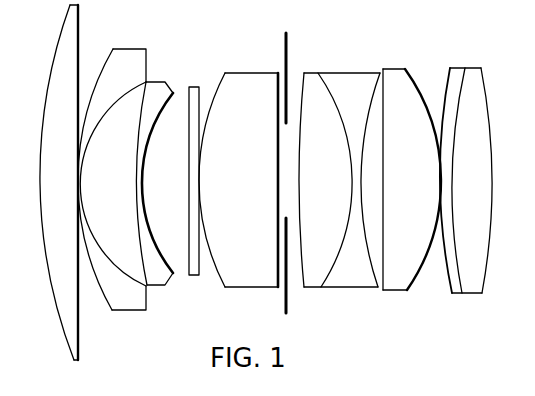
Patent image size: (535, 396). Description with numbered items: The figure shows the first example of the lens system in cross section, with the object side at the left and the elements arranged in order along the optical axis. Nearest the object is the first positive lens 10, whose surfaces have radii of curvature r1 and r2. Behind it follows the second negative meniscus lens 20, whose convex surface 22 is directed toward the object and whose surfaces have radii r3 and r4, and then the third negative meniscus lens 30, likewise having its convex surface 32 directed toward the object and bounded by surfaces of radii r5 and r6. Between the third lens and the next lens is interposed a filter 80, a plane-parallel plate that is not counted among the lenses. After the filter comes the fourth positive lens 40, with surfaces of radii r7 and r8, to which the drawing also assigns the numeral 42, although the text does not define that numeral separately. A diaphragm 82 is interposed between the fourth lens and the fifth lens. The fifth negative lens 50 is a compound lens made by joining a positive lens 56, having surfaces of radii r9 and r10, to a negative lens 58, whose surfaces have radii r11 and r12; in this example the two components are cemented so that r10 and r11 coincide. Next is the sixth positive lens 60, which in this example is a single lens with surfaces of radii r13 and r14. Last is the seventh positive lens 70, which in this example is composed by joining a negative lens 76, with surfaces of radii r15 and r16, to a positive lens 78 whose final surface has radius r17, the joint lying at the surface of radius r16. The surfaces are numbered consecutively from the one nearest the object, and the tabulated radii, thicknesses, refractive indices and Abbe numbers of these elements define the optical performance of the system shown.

The first positive lens 10 is at (50, 182).
The second negative meniscus lens 20 is at (112, 178).
The convex surface 22 is at (111, 309).
The third negative meniscus lens 30 is at (146, 196).
The convex surface 32 is at (138, 128).
The fourth positive lens 40 is at (235, 195).
The lens element 42 is at (221, 288).
The fifth negative lens 50 is at (343, 187).
The positive lens 56 is at (311, 199).
The negative lens 58 is at (365, 202).
The sixth positive lens 60 is at (418, 183).
The seventh positive lens 70 is at (475, 195).
The negative lens 76 is at (455, 195).
The positive lens 78 is at (504, 193).
The filter 80 is at (193, 87).
The diaphragm 82 is at (288, 60).
The radius of curvature of the first surface r1 is at (53, 66).
The radius of curvature of the second surface r2 is at (75, 77).
The radius of curvature of the third surface r3 is at (100, 62).
The radius of curvature of the fourth surface r4 is at (142, 80).
The radius of curvature of the fifth surface r5 is at (133, 156).
The radius of curvature of the sixth surface r6 is at (145, 173).
The radius of curvature of the seventh surface r7 is at (208, 122).
The radius of curvature of the eighth surface r8 is at (276, 130).
The radius of curvature of the ninth surface r9 is at (302, 146).
The radius of curvature of the tenth surface r10 is at (350, 165).
The radius of curvature of the eleventh surface r11 is at (320, 74).
The radius of curvature of the twelfth surface r12 is at (370, 115).
The radius of curvature of the thirteenth surface r13 is at (386, 160).
The radius of curvature of the fourteenth surface r14 is at (418, 85).
The radius of curvature of the fifteenth surface r15 is at (442, 108).
The radius of curvature of the sixteenth surface r16 is at (454, 150).
The radius of curvature of the seventeenth surface r17 is at (491, 160).